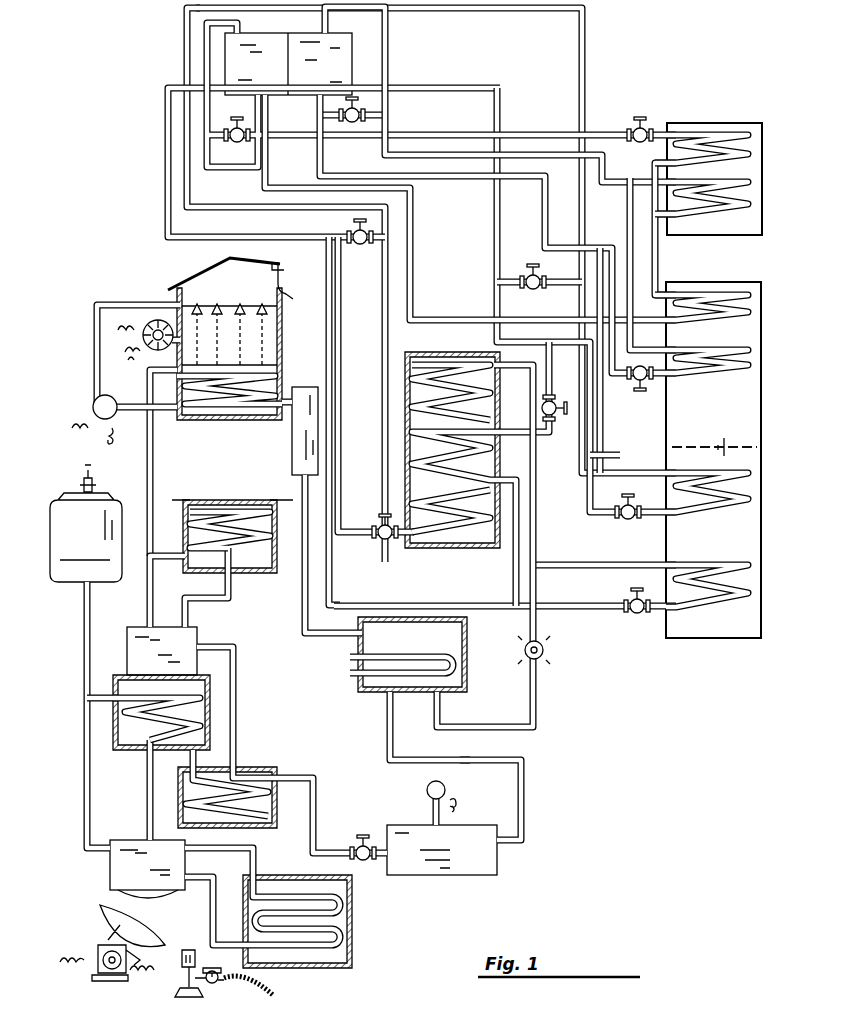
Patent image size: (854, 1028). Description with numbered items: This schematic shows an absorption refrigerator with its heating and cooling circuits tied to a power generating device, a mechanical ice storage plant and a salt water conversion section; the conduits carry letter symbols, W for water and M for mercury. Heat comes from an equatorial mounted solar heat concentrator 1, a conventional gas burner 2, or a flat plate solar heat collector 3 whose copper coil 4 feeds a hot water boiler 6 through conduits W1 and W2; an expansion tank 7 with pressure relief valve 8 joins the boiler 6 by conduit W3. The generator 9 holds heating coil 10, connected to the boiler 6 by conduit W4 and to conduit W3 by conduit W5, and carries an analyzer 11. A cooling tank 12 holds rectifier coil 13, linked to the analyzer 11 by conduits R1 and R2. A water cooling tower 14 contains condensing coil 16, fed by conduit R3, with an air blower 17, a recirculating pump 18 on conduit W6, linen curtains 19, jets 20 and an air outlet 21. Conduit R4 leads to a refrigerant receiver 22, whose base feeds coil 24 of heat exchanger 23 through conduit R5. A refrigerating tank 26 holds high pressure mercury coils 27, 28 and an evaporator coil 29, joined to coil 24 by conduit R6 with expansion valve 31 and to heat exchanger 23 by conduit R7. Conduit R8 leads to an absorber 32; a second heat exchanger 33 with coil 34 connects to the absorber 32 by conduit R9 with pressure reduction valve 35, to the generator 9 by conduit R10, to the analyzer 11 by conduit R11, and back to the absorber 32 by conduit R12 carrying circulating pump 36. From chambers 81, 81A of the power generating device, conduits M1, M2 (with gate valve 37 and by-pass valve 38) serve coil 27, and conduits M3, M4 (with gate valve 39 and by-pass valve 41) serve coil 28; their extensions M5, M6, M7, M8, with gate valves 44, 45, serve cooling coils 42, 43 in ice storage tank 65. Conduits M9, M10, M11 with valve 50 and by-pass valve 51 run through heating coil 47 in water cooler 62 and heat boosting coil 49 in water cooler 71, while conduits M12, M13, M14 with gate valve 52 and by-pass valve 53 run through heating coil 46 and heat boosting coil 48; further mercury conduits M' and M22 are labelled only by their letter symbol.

The equatorial mounted solar heat concentrator 1 is at (100, 932).
The gas burner 2 is at (185, 985).
The flat plate solar heat collector 3 is at (352, 942).
The copper coil 4 is at (340, 905).
The hot water boiler 6 is at (110, 873).
The expansion tank 7 is at (50, 545).
The pressure relief valve 8 is at (93, 484).
The absorption refrigerator generator 9 is at (128, 750).
The heating coil 10 is at (205, 712).
The analyzer 11 is at (190, 638).
The cooling tank 12 is at (252, 566).
The rectifier coil 13 is at (258, 503).
The water cooling tower 14 is at (282, 334).
The condensing coil 16 is at (282, 376).
The motor driven air blower 17 is at (158, 320).
The water recirculating pump 18 is at (98, 418).
The water saturated linen curtains 19 is at (265, 350).
The jets 20 is at (282, 316).
The air outlet 21 is at (286, 268).
The refrigerant receiver 22 is at (292, 455).
The heat exchanger 23 is at (358, 655).
The heat exchanger coil 24 is at (360, 680).
The refrigerating tank 26 is at (412, 352).
The high pressure mercury cooling coil 27 is at (440, 545).
The high pressure mercury cooling coil 28 is at (410, 460).
The evaporator coil 29 is at (410, 380).
The expansion valve 31 is at (524, 647).
The absorber 32 is at (497, 862).
The second heat exchanger 33 is at (280, 768).
The coil 34 is at (243, 772).
The pressure reduction valve 35 is at (364, 861).
The liquid circulating pump 36 is at (446, 789).
The gate valve 37 is at (385, 540).
The pressure release by-pass valve 38 is at (360, 244).
The gate valve 39 is at (549, 424).
The pressure release by-pass valve 41 is at (533, 290).
The high pressure mercury cooling coil 42 is at (722, 612).
The high pressure mercury cooling coil 43 is at (702, 512).
The gate valve 44 is at (636, 614).
The gate valve 45 is at (628, 520).
The high pressure mercury heating coil 46 is at (707, 381).
The high pressure mercury heating coil 47 is at (712, 324).
The mercury heat boosting coil 48 is at (708, 210).
The mercury heat boosting coil 49 is at (715, 162).
The valve 50 is at (646, 126).
The pressure release by-pass valve 51 is at (237, 142).
The gate valve 52 is at (646, 385).
The pressure release by-pass valve 53 is at (352, 124).
The water cooler 62 is at (728, 282).
The ice storage tank 65 is at (695, 645).
The water cooler 71 is at (735, 123).
The chamber of the power generating device 81 is at (225, 60).
The chamber of the power generating device 81A is at (300, 25).
The medium line M' is at (311, 162).
The conduit M1 is at (333, 412).
The conduit M2 is at (372, 324).
The conduit M3 is at (445, 75).
The conduit M4 is at (440, 12).
The conduit M5 is at (358, 604).
The conduit M6 is at (572, 556).
The conduit M7 is at (603, 420).
The conduit M8 is at (620, 470).
The conduit M9 is at (263, 130).
The conduit M10 is at (660, 262).
The conduit M11 is at (210, 120).
The conduit M12 is at (318, 100).
The conduit M13 is at (626, 220).
The conduit M14 is at (385, 46).
The medium line M22 is at (187, 44).
The conduit R1 is at (147, 600).
The conduit R2 is at (233, 597).
The conduit R3 is at (153, 470).
The conduit R4 is at (280, 415).
The conduit R5 is at (305, 628).
The conduit R6 is at (512, 584).
The conduit R7 is at (540, 652).
The conduit R8 is at (536, 768).
The conduit R9 is at (316, 818).
The conduit R10 is at (198, 762).
The conduit R11 is at (237, 690).
The conduit R12 is at (350, 765).
The conduit W1 is at (255, 856).
The conduit W2 is at (212, 906).
The conduit W3 is at (87, 660).
The conduit W4 is at (147, 808).
The conduit W5 is at (90, 706).
The conduit W6 is at (97, 340).